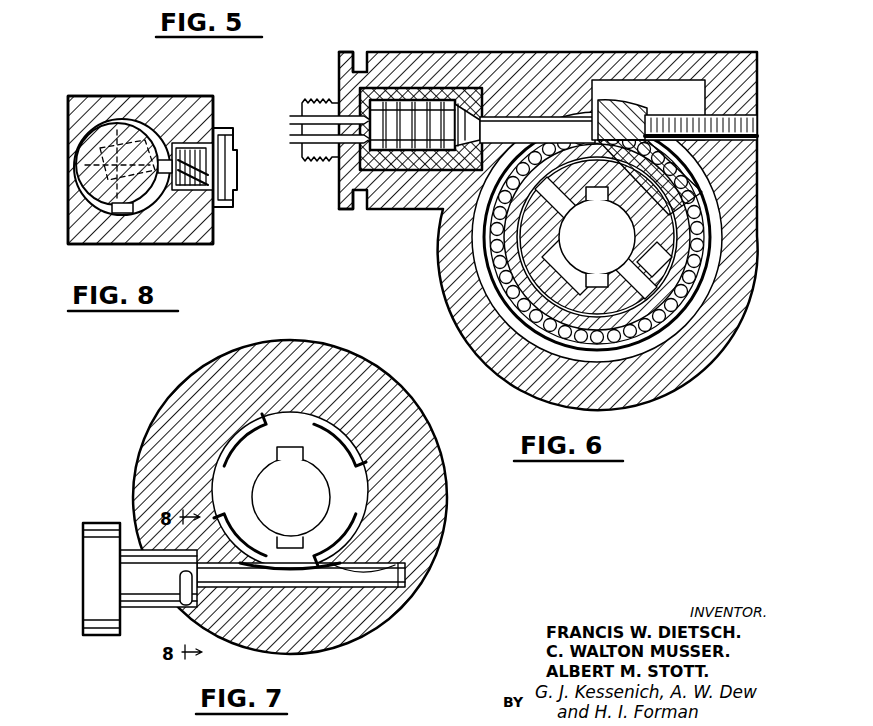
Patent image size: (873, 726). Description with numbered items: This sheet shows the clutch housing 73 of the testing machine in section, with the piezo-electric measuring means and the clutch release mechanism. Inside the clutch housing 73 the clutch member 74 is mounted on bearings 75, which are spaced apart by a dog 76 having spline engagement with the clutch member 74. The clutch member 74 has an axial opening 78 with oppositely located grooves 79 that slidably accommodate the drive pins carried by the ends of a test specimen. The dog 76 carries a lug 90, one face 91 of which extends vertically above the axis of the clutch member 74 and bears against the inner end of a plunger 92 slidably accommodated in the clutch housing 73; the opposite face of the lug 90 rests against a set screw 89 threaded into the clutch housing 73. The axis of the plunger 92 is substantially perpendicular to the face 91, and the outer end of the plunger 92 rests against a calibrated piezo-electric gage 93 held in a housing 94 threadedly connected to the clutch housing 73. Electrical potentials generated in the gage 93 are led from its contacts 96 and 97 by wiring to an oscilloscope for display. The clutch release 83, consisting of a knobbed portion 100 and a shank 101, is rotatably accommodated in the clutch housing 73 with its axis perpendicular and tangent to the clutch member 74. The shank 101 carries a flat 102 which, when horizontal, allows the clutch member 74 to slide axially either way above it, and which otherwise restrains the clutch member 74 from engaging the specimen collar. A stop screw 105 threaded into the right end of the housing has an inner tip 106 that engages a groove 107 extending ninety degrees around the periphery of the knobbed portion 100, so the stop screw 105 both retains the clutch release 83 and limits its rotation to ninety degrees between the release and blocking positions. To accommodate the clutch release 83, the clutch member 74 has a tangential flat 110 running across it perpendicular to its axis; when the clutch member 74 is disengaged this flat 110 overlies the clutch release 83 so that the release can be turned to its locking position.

In FIG. 8, the clutch housing 73 is at (109, 100).
In FIG. 6, the clutch housing 73 is at (628, 58).
In FIG. 7, the clutch housing 73 is at (206, 441).
In FIG. 6, the clutch member 74 is at (527, 254).
In FIG. 7, the clutch member 74 is at (302, 430).
In FIG. 6, the bearings 75 is at (712, 226).
In FIG. 6, the dog 76 is at (660, 284).
In FIG. 6, the axial opening 78 is at (603, 233).
In FIG. 7, the axial opening 78 is at (253, 520).
In FIG. 6, the grooves 79 is at (595, 277).
In FIG. 7, the grooves 79 is at (292, 540).
In FIG. 8, the clutch release 83 is at (72, 139).
In FIG. 7, the clutch release 83 is at (74, 560).
In FIG. 6, the set screw 89 is at (758, 126).
In FIG. 6, the lug 90 is at (630, 118).
In FIG. 6, the face 91 is at (594, 102).
In FIG. 6, the plunger 92 is at (543, 128).
In FIG. 6, the piezo-electric gage 93 is at (349, 43).
In FIG. 6, the housing 94 is at (346, 210).
In FIG. 6, the contact 96 is at (300, 119).
In FIG. 6, the contact 97 is at (300, 140).
In FIG. 8, the knobbed portion 100 is at (88, 178).
In FIG. 7, the knobbed portion 100 is at (138, 597).
In FIG. 8, the shank 101 is at (155, 128).
In FIG. 6, the shank 101 is at (421, 129).
In FIG. 7, the shank 101 is at (360, 575).
In FIG. 8, the flat 102 is at (127, 110).
In FIG. 6, the flat 102 is at (412, 125).
In FIG. 7, the flat 102 is at (323, 560).
In FIG. 8, the stop screw 105 is at (236, 181).
In FIG. 8, the inner tip 106 is at (163, 176).
In FIG. 8, the groove 107 is at (128, 213).
In FIG. 7, the groove 107 is at (182, 578).
In FIG. 7, the tangential flat 110 is at (285, 562).